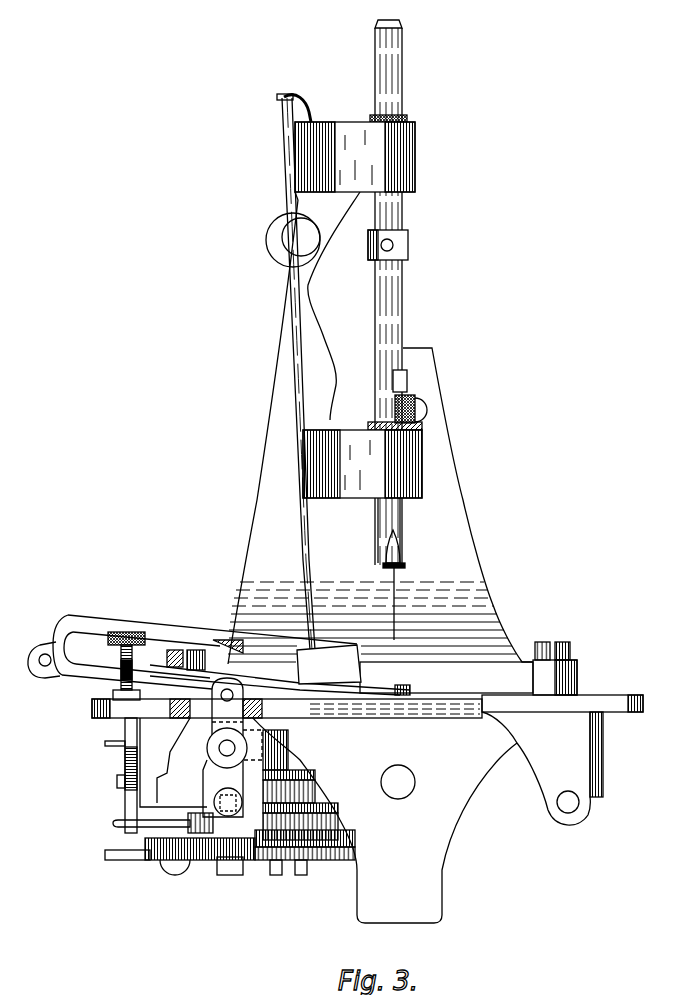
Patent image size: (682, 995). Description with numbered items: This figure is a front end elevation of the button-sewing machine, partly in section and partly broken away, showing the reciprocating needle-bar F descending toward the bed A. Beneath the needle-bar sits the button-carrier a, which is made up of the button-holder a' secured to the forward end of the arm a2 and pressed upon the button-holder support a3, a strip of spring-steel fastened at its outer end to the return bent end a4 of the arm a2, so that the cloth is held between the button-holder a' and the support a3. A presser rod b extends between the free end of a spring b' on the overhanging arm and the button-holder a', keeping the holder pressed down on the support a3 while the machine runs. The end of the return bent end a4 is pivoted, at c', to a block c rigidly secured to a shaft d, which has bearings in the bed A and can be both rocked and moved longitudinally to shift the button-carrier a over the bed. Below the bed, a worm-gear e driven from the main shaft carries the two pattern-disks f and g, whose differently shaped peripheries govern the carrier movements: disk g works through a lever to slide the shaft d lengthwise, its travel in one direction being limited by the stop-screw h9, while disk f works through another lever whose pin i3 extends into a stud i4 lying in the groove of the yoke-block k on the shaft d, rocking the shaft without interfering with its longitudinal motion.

The reciprocating needle-bar F is at (398, 316).
The presser rod b is at (281, 372).
The spring b' is at (300, 100).
The bed A is at (582, 696).
The button-carrier a is at (329, 664).
The button-holder a' is at (280, 679).
The arm a2 is at (200, 632).
The button-holder support a3 is at (446, 677).
The return bent end a4 is at (148, 673).
The stop-screw h9 is at (120, 683).
The block c is at (227, 719).
The pivot c' is at (242, 691).
The shaft d is at (260, 748).
The yoke-block k is at (227, 794).
The stud i4 is at (214, 800).
The pin i3 is at (233, 823).
The worm-gear e is at (297, 795).
The pattern-disk g is at (317, 820).
The pattern-disk f is at (323, 852).